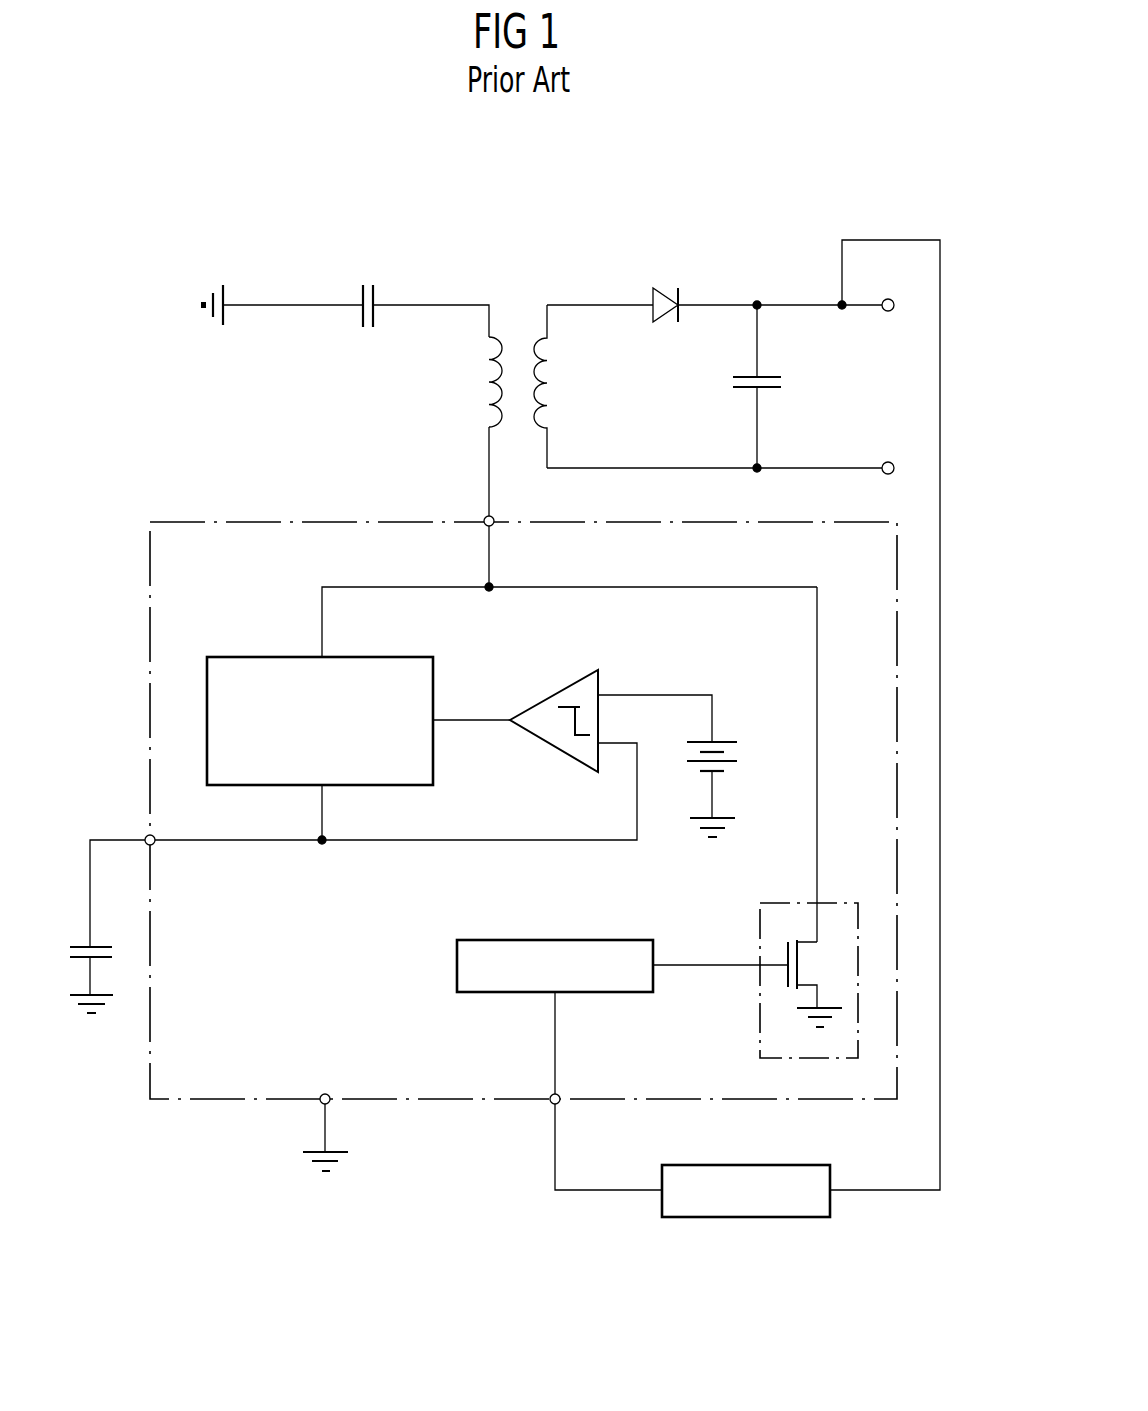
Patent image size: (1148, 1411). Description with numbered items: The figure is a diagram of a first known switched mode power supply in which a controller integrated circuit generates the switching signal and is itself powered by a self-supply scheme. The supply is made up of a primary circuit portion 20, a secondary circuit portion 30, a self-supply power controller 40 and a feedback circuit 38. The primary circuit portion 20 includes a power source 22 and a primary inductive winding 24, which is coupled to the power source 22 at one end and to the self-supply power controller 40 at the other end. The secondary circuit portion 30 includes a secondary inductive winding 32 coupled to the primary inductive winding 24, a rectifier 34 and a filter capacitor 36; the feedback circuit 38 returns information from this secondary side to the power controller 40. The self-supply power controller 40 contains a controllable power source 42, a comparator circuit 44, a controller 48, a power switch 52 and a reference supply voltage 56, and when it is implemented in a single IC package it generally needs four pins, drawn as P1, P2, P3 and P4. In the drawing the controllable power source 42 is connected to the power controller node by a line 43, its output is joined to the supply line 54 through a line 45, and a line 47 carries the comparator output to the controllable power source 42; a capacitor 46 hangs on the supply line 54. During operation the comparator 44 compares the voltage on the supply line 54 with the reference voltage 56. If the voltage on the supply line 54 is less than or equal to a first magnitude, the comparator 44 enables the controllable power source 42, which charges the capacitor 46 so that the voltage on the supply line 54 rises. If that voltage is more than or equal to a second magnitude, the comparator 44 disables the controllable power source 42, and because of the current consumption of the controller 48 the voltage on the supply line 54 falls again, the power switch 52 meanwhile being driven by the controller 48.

The primary circuit portion 20 is at (353, 343).
The power source 22 is at (360, 291).
The primary inductive winding 24 is at (482, 383).
The secondary circuit portion 30 is at (714, 322).
The secondary inductive winding 32 is at (555, 382).
The rectifier 34 is at (667, 316).
The filter capacitor 36 is at (770, 390).
The feedback circuit 38 is at (745, 1218).
The self-supply power controller 40 is at (122, 592).
The controllable power source 42 is at (436, 688).
The connection line 43 is at (320, 621).
The comparator circuit 44 is at (600, 680).
The connection line 45 is at (320, 821).
The capacitor 46 is at (103, 945).
The control line 47 is at (470, 722).
The controller 48 is at (455, 965).
The power switch 52 is at (808, 902).
The supply line 54 is at (470, 841).
The reference supply voltage 56 is at (722, 740).
The pin P1 is at (484, 517).
The pin P2 is at (146, 836).
The pin P3 is at (328, 1094).
The pin P4 is at (551, 1094).